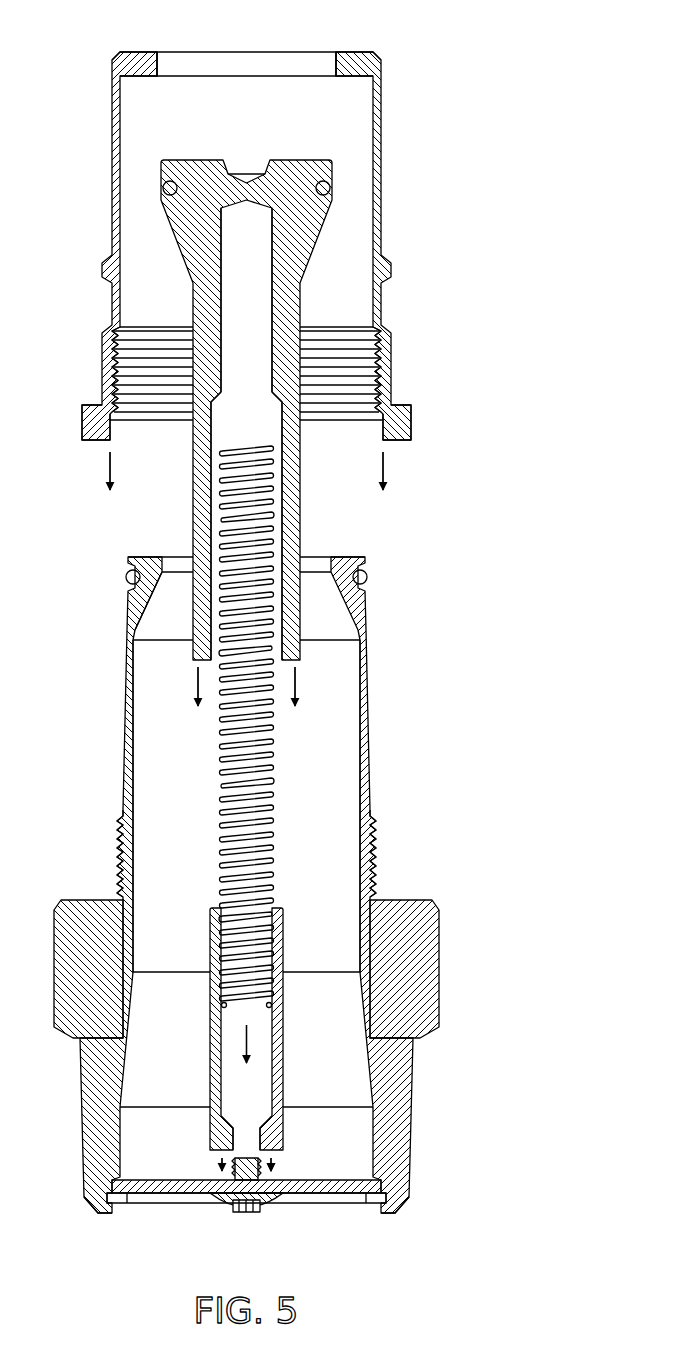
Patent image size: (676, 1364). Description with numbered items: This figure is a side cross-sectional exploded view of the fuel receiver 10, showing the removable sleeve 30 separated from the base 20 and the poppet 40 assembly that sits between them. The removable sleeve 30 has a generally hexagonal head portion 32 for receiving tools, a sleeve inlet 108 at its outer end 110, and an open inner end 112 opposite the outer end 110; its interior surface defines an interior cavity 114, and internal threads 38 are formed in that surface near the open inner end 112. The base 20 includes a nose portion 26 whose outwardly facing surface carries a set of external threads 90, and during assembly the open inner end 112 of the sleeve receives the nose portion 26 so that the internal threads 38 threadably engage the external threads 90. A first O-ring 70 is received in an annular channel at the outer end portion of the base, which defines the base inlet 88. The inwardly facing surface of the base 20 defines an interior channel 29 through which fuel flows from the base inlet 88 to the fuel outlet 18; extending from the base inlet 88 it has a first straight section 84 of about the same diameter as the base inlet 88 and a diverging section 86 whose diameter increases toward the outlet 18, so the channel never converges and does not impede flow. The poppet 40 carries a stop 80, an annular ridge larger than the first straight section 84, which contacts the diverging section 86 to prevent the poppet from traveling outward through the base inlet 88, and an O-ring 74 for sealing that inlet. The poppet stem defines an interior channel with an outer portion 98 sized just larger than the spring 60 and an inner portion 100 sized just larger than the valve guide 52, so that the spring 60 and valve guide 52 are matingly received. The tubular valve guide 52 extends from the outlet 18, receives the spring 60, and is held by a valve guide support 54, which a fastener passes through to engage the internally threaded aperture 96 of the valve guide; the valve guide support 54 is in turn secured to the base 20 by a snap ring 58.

The fuel receiver 10 is at (503, 110).
The fuel outlet 18 is at (345, 1208).
The base 20 is at (449, 930).
The nose portion 26 is at (369, 705).
The interior channel 29 is at (158, 859).
The removable sleeve 30 is at (98, 273).
The head portion 32 is at (405, 427).
The internal threads 38 is at (116, 370).
The poppet 40 is at (205, 151).
The valve guide 52 is at (285, 1082).
The valve guide support 54 is at (308, 1194).
The snap ring 58 is at (120, 1205).
The spring 60 is at (275, 545).
The first O-ring 70 is at (331, 188).
The O-ring 74 is at (367, 577).
The stop 80 is at (160, 203).
The first straight section 84 is at (165, 556).
The diverging section 86 is at (156, 602).
The base inlet 88 is at (338, 556).
The external threads 90 is at (374, 832).
The internally threaded aperture 96 is at (240, 1130).
The outer portion 98 is at (222, 294).
The inner portion 100 is at (213, 420).
The sleeve inlet 108 is at (157, 66).
The outer end 110 is at (340, 63).
The open inner end 112 is at (347, 440).
The interior cavity 114 is at (142, 412).